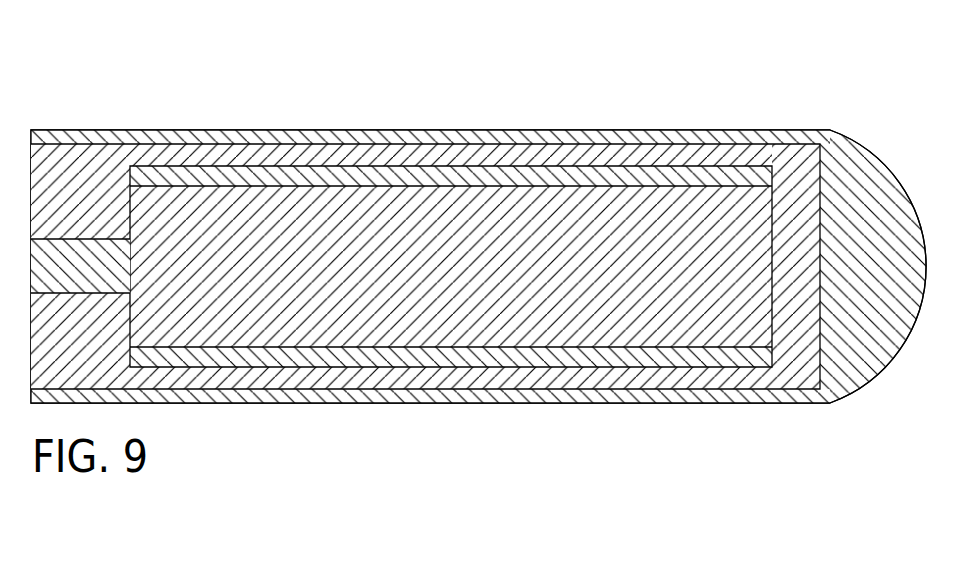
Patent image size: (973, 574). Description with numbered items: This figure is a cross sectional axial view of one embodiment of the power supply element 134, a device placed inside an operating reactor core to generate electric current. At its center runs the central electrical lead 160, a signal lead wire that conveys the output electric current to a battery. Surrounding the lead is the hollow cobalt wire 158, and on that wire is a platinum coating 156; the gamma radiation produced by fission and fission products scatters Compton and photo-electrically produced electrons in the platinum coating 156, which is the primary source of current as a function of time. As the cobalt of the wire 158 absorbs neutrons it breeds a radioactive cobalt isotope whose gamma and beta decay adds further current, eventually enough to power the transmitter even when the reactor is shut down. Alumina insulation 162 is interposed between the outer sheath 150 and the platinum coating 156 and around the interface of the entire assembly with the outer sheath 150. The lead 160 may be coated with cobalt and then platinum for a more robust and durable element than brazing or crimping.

The power supply element 134 is at (358, 112).
The outer sheath 150 is at (510, 131).
The alumina insulation 162 is at (288, 140).
The platinum coating 156 is at (633, 173).
The hollow cobalt-59 wire 158 is at (730, 207).
The central electrical lead 160 is at (90, 254).